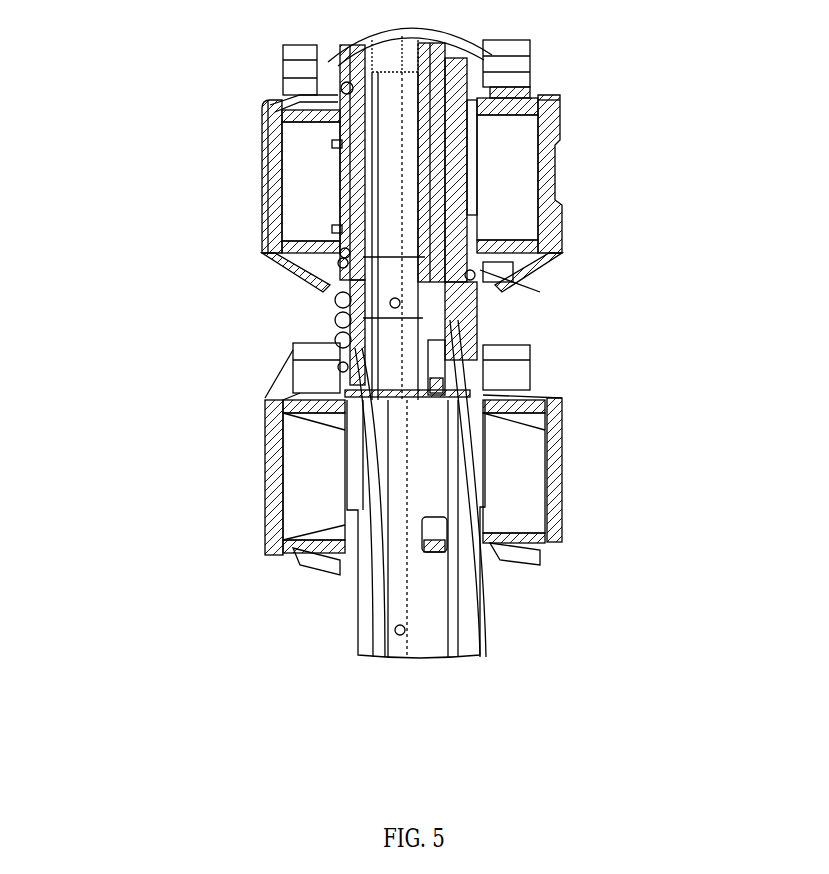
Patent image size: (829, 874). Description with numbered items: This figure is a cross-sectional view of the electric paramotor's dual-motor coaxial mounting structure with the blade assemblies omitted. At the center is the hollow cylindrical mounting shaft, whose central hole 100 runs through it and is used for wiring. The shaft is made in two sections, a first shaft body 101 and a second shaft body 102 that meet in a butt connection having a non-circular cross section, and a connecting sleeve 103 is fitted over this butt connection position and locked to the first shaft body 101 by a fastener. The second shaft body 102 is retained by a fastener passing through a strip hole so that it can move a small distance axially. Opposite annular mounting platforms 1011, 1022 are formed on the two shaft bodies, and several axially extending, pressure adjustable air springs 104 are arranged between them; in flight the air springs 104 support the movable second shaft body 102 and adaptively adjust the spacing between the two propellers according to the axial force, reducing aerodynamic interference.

The central hole 100 is at (413, 167).
The first shaft body 101 is at (490, 382).
The annular mounting platform 1011 is at (413, 332).
The second shaft body 102 is at (505, 278).
The annular mounting platform 1022 is at (260, 218).
The connecting sleeve 103 is at (338, 320).
The pressure adjustable air spring 104 is at (440, 352).